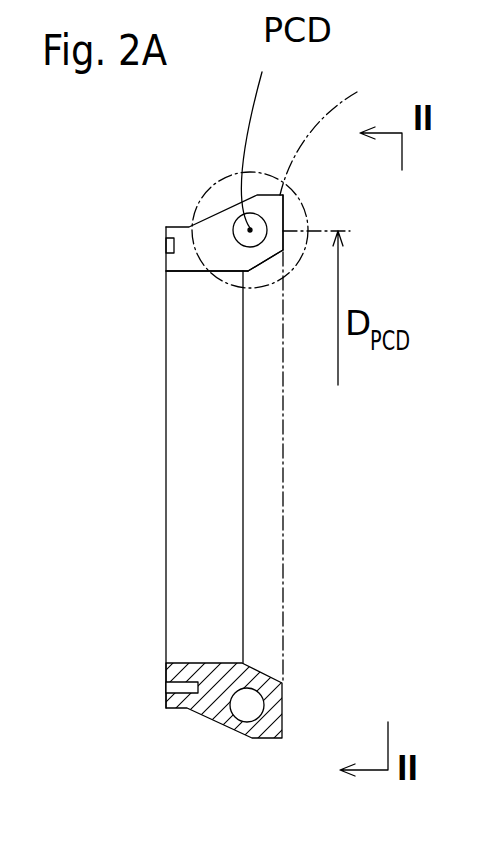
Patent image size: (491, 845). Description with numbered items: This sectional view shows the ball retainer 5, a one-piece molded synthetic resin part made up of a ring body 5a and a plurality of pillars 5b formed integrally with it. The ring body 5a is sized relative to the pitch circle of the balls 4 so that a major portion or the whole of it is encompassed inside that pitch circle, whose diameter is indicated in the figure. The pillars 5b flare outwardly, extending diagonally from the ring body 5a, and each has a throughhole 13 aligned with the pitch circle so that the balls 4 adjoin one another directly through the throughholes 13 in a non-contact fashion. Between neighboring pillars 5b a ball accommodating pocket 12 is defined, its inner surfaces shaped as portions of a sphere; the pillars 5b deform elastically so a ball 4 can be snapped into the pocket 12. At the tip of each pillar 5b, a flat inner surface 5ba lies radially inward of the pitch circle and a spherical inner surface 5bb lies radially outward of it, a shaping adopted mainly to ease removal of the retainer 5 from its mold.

The ball 4 is at (327, 374).
The ball retainer 5 is at (140, 423).
The ring body 5a is at (188, 229).
The pillar 5b is at (217, 210).
The inner surface 5ba is at (247, 261).
The inner surface 5bb is at (278, 212).
The ball accommodating pocket 12 is at (218, 272).
The throughhole 13 is at (237, 219).